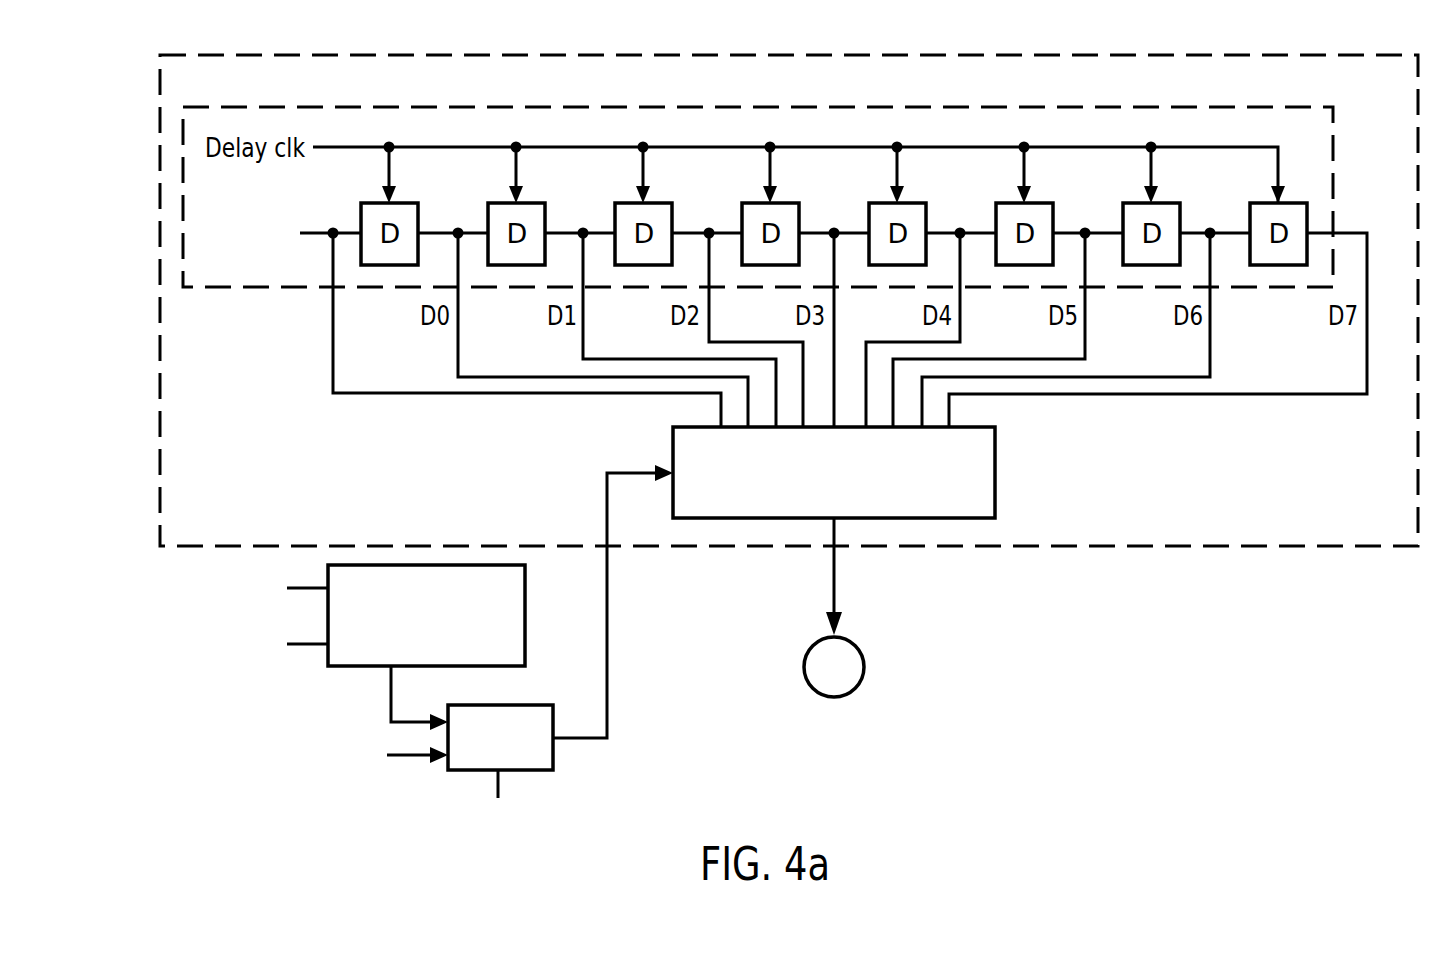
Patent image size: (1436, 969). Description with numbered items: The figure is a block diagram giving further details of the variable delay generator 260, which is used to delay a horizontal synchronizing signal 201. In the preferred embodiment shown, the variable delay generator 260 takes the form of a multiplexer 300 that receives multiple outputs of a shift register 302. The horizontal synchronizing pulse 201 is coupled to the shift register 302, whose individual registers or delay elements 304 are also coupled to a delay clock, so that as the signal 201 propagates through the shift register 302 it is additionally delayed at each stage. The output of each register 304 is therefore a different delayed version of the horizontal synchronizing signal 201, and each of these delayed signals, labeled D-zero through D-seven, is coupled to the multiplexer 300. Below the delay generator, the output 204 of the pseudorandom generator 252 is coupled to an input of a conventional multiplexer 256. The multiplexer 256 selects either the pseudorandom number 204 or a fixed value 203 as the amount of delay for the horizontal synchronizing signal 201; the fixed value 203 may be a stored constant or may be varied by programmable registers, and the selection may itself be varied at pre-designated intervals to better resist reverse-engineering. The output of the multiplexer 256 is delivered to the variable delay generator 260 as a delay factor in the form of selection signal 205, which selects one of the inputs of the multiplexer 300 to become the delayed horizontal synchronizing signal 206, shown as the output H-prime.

The variable delay generator 260 is at (1126, 42).
The shift register 302 is at (1224, 96).
The delay element 304 is at (1307, 218).
The horizontal synchronizing signal 201 is at (319, 232).
The multiplexer 300 is at (997, 473).
The pseudorandom generator 252 is at (528, 612).
The multiplexer 256 is at (518, 705).
The pseudorandom number 204 is at (391, 695).
The fixed value 203 is at (407, 757).
The selection signal 205 is at (607, 595).
The delayed horizontal synchronizing signal 206 is at (836, 590).